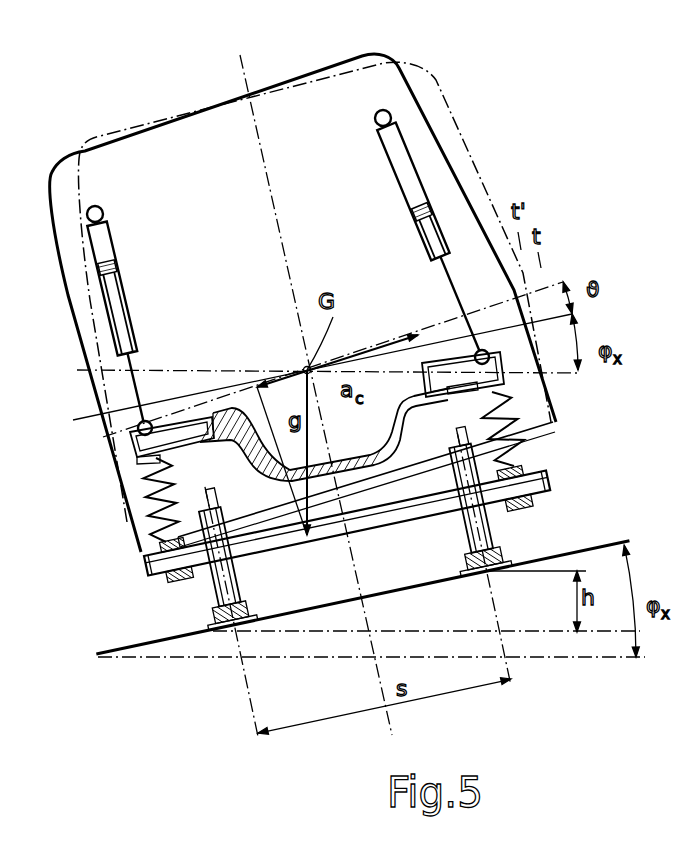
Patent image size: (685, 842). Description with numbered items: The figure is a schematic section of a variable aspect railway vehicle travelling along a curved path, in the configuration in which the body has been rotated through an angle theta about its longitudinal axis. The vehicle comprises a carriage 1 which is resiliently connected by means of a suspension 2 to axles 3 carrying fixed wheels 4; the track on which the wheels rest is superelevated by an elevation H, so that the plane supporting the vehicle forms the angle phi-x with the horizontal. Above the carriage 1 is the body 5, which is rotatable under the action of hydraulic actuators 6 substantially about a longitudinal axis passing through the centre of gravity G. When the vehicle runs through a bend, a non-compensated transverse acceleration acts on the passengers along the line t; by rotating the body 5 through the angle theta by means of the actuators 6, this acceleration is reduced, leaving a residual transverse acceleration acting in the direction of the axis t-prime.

The carriage 1 is at (372, 473).
The suspension 2 is at (140, 503).
The axles 3 is at (332, 530).
The fixed wheels 4 is at (230, 570).
The body 5 is at (447, 160).
The hydraulic actuators 6 is at (102, 248).